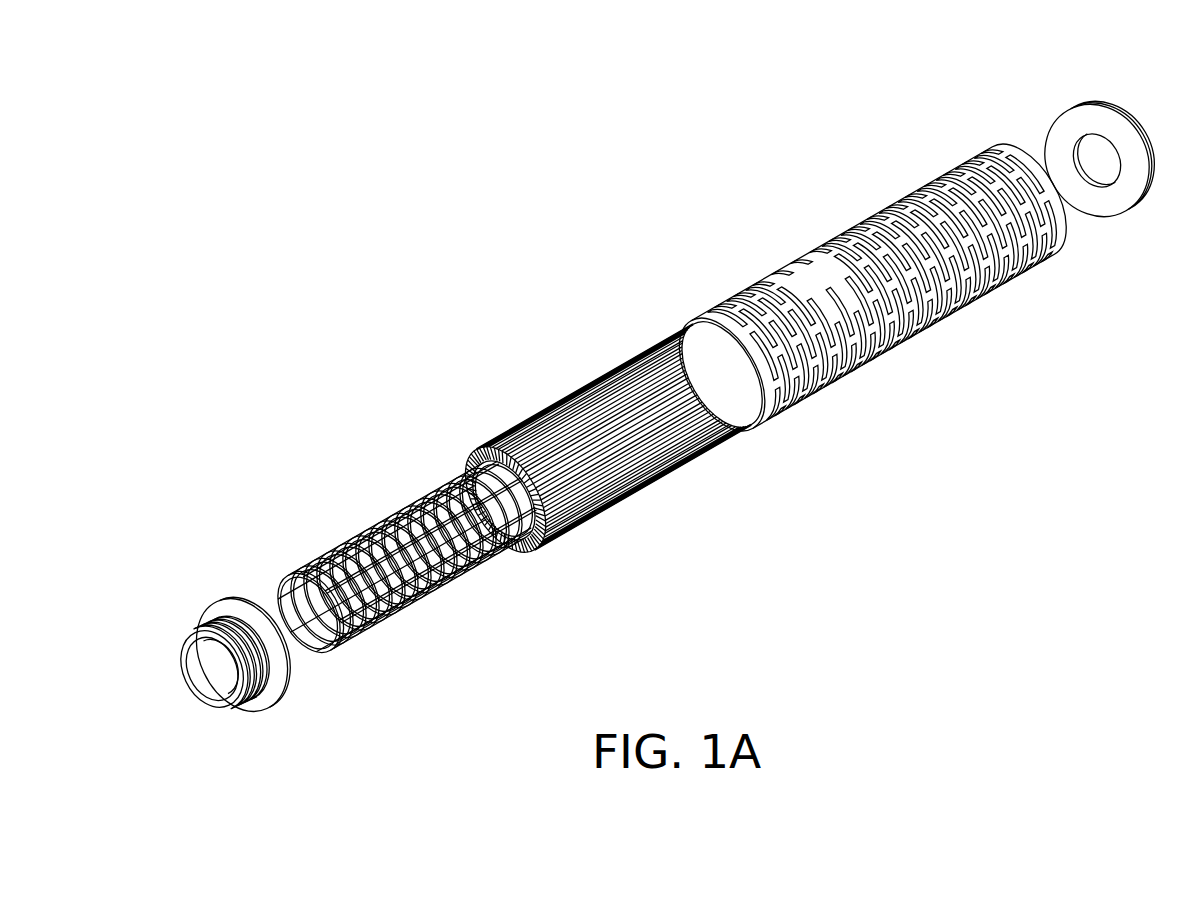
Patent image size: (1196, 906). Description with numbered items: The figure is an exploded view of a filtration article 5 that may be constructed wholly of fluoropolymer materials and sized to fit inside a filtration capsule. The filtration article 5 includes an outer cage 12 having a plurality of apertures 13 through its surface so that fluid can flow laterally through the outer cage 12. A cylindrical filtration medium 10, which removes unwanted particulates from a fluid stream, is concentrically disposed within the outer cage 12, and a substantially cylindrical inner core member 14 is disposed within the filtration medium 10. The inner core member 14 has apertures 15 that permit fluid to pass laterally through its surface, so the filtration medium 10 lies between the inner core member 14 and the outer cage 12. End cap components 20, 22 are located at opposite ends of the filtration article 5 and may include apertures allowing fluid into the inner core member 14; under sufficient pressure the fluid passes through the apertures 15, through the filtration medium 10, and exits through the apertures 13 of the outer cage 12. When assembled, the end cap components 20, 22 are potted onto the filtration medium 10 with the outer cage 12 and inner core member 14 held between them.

The filtration article 5 is at (640, 243).
The filtration medium 10 is at (628, 495).
The outer cage 12 is at (851, 249).
The apertures 13 is at (905, 200).
The inner core member 14 is at (428, 594).
The apertures 15 is at (382, 621).
The end cap component 20 is at (268, 713).
The end cap component 22 is at (1107, 110).